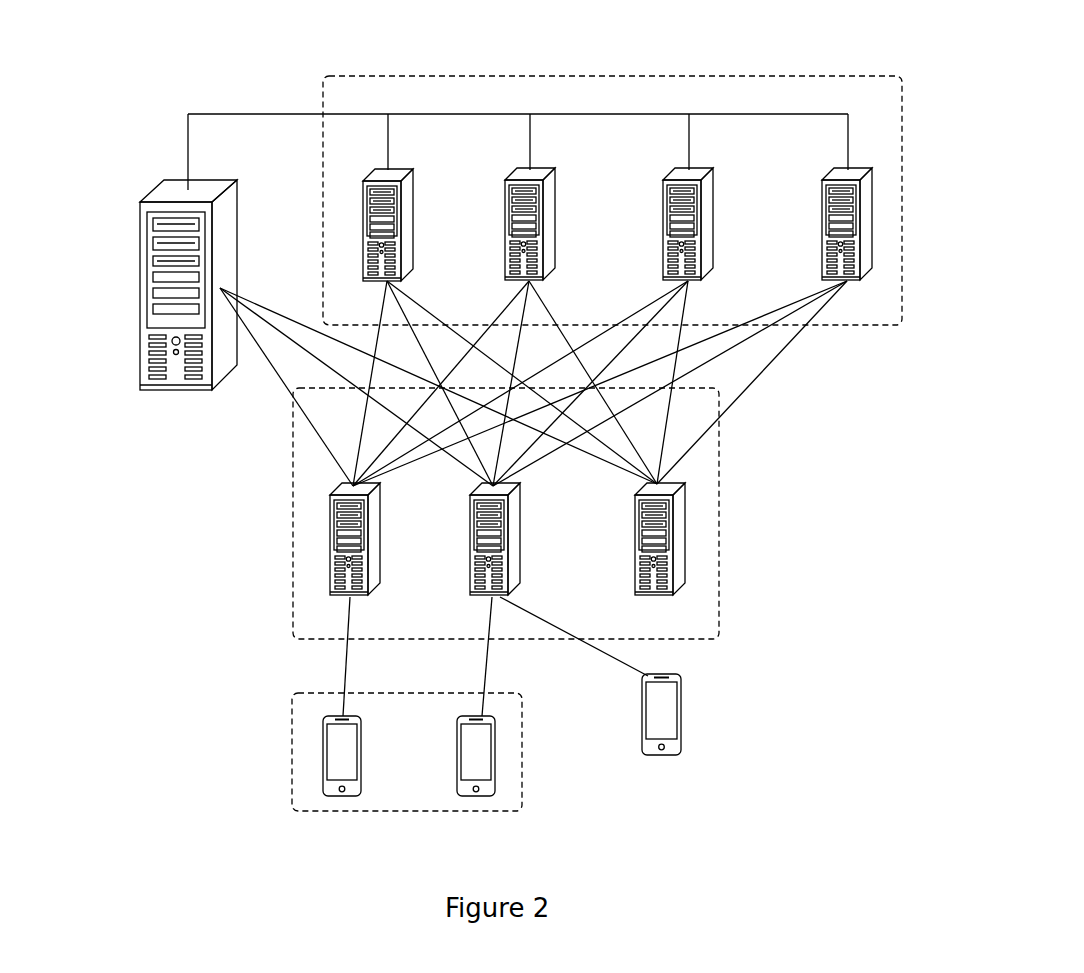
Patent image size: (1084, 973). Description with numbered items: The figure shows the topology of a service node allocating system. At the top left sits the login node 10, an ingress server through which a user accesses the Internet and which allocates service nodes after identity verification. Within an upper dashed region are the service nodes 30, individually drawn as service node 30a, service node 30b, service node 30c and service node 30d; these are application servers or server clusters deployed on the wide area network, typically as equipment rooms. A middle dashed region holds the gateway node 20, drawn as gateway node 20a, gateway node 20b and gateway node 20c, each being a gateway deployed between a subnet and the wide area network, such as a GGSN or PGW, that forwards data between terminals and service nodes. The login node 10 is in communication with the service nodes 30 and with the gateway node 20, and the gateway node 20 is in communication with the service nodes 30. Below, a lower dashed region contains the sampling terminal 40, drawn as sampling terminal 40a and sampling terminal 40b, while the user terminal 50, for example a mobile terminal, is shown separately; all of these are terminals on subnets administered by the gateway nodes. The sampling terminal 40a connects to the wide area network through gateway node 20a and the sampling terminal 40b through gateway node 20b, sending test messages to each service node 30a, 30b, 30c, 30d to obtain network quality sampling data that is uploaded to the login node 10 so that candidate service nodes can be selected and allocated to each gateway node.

The login node 10 is at (157, 193).
The service nodes 30 is at (858, 76).
The service node 30a is at (401, 170).
The service node 30b is at (545, 168).
The service node 30c is at (704, 168).
The service node 30d is at (866, 168).
The gateway node 20 is at (720, 621).
The gateway node 20a is at (372, 541).
The gateway node 20b is at (513, 541).
The gateway node 20c is at (679, 543).
The sampling terminal 40 is at (492, 812).
The sampling terminal 40a is at (362, 745).
The sampling terminal 40b is at (497, 755).
The user terminal 50 is at (663, 755).